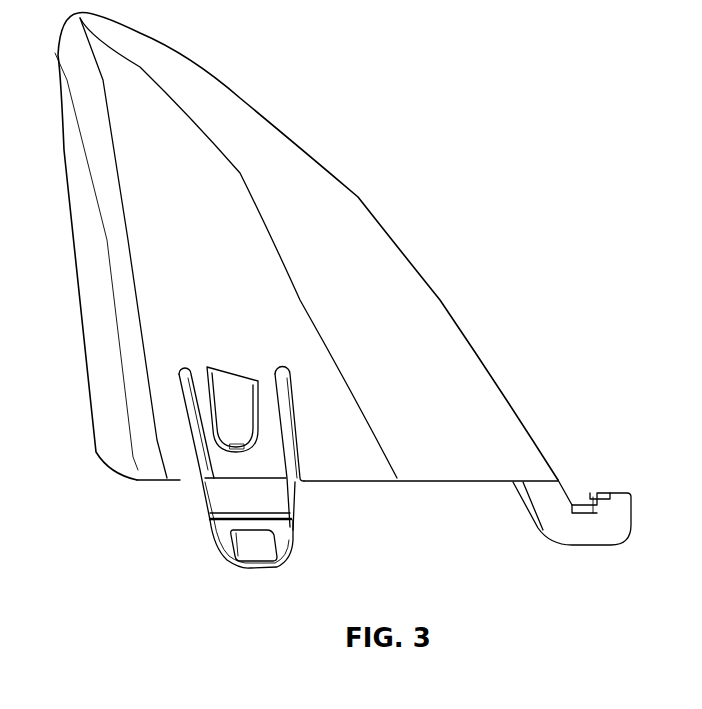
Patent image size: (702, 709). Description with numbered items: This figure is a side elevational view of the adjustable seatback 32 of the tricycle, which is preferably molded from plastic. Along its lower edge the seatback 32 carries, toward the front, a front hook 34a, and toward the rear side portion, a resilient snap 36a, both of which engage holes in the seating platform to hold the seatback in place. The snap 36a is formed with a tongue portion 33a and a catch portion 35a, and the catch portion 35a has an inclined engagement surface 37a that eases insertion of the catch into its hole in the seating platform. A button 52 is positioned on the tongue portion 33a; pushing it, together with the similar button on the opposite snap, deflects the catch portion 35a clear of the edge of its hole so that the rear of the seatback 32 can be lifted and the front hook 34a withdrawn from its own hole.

The adjustable seatback 32 is at (355, 225).
The slot opening 52 is at (235, 408).
The tongue portion 33a is at (225, 497).
The front hook 34a is at (590, 532).
The catch portion 35a is at (292, 530).
The snap 36a is at (257, 560).
The inclined engagement surface 37a is at (283, 555).